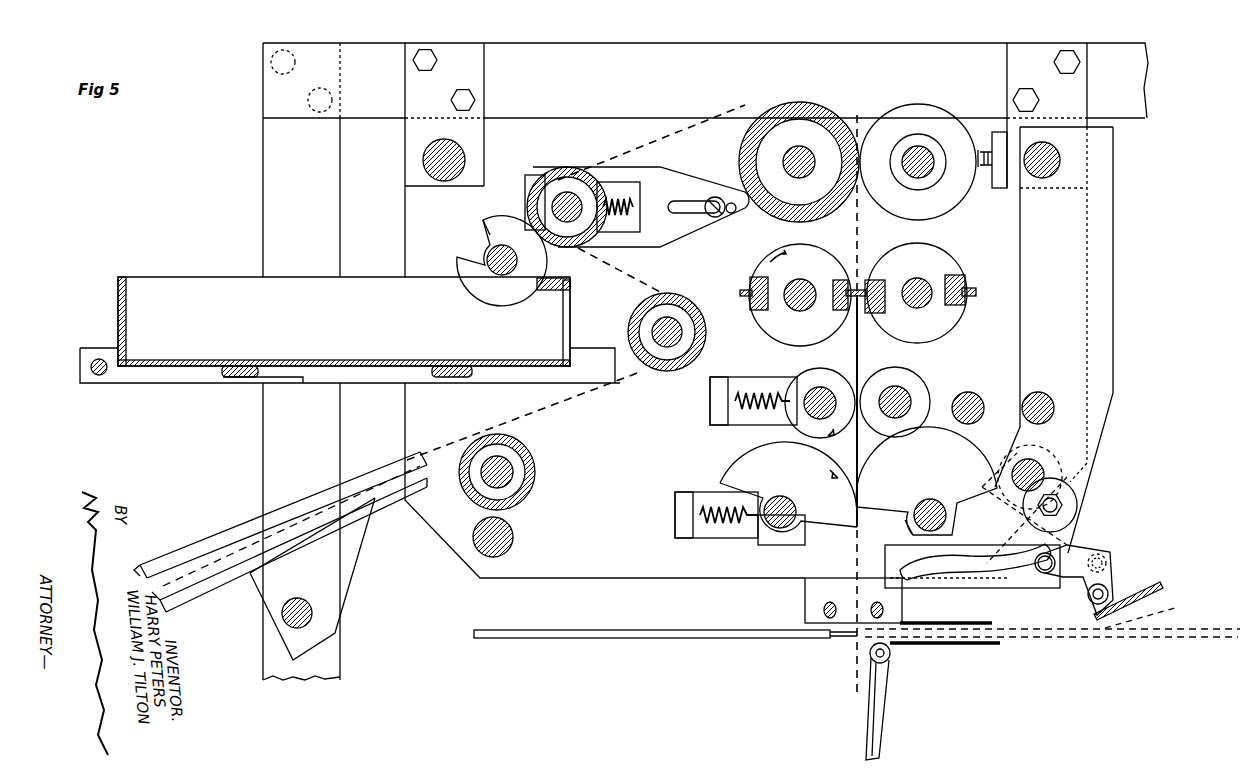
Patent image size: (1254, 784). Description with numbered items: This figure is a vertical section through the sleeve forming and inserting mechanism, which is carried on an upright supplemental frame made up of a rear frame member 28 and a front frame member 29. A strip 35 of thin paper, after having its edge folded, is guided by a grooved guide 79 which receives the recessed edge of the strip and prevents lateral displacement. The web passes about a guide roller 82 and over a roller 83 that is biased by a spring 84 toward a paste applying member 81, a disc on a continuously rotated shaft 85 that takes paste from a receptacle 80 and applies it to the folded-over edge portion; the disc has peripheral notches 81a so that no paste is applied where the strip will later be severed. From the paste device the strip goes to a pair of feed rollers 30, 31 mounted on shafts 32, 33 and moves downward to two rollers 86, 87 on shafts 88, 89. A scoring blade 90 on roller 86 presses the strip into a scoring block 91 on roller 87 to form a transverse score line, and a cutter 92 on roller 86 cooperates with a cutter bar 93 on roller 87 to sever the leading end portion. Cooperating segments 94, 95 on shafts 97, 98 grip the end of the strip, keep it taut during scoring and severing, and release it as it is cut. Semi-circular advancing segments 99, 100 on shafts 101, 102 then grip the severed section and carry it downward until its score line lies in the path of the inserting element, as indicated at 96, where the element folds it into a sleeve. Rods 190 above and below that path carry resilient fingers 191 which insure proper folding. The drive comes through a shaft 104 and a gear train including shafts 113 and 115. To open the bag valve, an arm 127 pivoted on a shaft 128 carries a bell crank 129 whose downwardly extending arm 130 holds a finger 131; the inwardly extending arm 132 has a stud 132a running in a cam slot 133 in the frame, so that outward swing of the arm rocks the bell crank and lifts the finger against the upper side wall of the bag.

The rear frame member 28 is at (992, 52).
The front frame member 29 is at (268, 191).
The feed roller 30 is at (940, 118).
The feed roller 31 is at (740, 161).
The shaft 32 is at (800, 170).
The shaft 33 is at (916, 176).
The strip 35 is at (861, 243).
The grooved guide 79 is at (252, 527).
The receptacle 80 is at (228, 278).
The paste applying member 81 is at (492, 295).
The peripheral notches 81a is at (470, 256).
The guide roller 82 is at (702, 344).
The roller 83 is at (603, 234).
The spring 84 is at (638, 200).
The shaft 85 is at (483, 230).
The roller 86 is at (818, 254).
The roller 87 is at (948, 264).
The shaft 88 is at (793, 304).
The shaft 89 is at (925, 310).
The scoring blade 90 is at (752, 288).
The scoring block 91 is at (972, 291).
The cutter 92 is at (850, 312).
The cutter bar 93 is at (880, 282).
The segment 94 is at (798, 382).
The segment 95 is at (925, 394).
The position of score line in inserting element path 96 is at (573, 637).
The shaft 97 is at (822, 386).
The shaft 98 is at (908, 410).
The advancing segment 99 is at (834, 528).
The advancing segment 100 is at (890, 508).
The shaft 101 is at (779, 507).
The shaft 102 is at (931, 510).
The shaft 104 is at (512, 472).
The shaft 113 is at (974, 405).
The shaft 115 is at (1040, 404).
The arm 127 is at (1092, 528).
The shaft 128 is at (1037, 465).
The bell crank 129 is at (1110, 568).
The downwardly extending arm 130 is at (1090, 596).
The finger 131 is at (1140, 590).
The inwardly extending arm 132 is at (1097, 550).
The stud 132a is at (1045, 574).
The cam slot 133 is at (1010, 560).
The rods 190 is at (892, 655).
The resilient fingers 191 is at (982, 622).